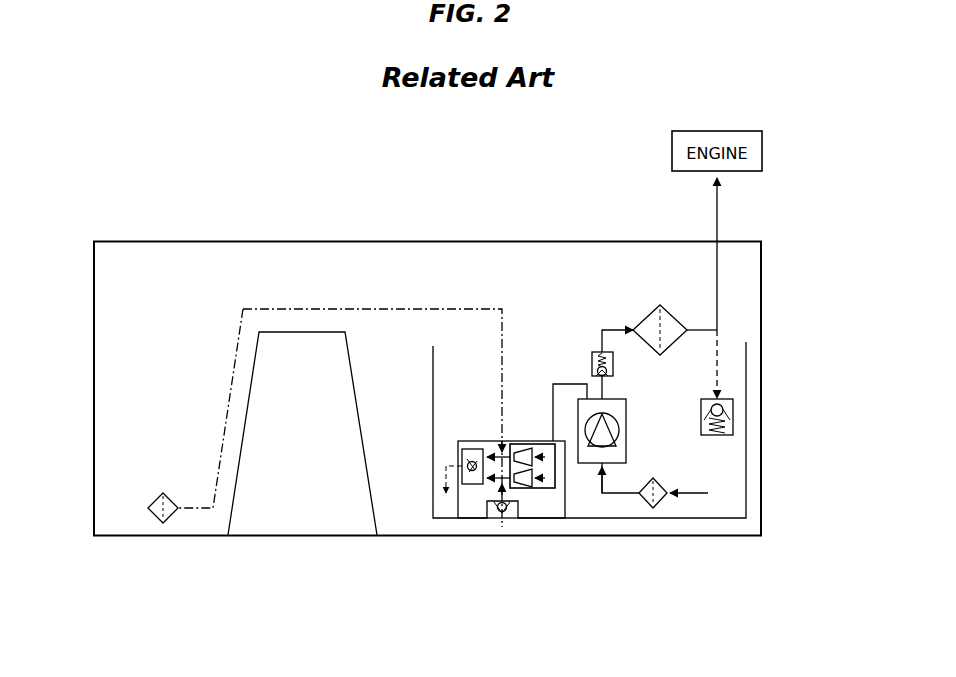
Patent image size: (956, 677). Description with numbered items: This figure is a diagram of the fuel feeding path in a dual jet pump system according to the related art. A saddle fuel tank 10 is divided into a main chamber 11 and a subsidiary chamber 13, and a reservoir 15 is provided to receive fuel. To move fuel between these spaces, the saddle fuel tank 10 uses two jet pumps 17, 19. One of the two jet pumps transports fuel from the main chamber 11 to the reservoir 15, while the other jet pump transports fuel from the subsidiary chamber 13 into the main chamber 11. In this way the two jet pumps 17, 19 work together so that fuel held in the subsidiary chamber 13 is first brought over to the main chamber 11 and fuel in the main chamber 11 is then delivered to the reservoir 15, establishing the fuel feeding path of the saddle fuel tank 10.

The saddle fuel tank 10 is at (283, 241).
The main chamber 11 is at (639, 406).
The subsidiary chamber 13 is at (325, 422).
The reservoir 15 is at (747, 445).
The jet pump 17 is at (527, 492).
The jet pump 19 is at (526, 438).